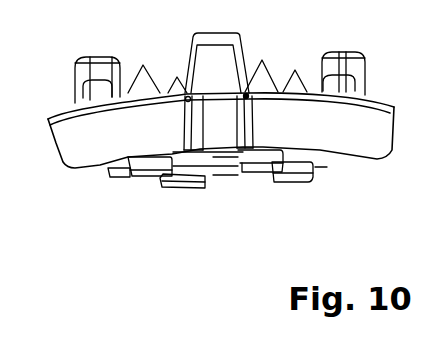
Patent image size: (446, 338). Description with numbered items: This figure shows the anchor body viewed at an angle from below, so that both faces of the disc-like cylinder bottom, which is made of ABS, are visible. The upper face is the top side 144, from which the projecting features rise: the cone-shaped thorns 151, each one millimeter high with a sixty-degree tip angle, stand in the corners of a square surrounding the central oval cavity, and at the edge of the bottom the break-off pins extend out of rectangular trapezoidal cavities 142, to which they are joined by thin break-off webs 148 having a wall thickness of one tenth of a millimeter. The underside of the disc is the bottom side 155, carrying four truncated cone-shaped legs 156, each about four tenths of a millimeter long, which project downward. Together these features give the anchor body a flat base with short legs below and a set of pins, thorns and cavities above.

The rectangular trapezoidal cavity 142 is at (220, 132).
The top side 144 is at (90, 133).
The break-off web 148 is at (246, 97).
The cone-shaped thorn 151 is at (143, 83).
The bottom side 155 is at (320, 154).
The truncated cone-shaped leg 156 is at (292, 178).